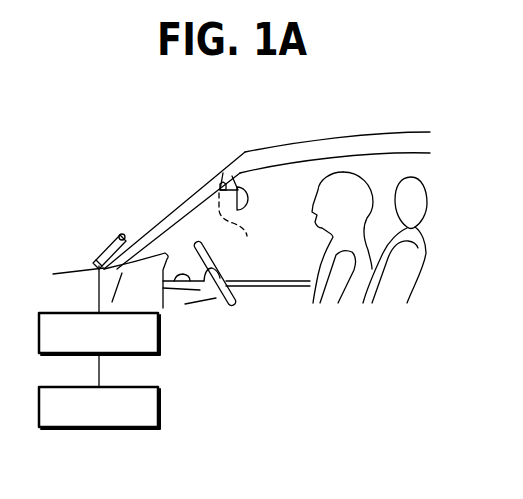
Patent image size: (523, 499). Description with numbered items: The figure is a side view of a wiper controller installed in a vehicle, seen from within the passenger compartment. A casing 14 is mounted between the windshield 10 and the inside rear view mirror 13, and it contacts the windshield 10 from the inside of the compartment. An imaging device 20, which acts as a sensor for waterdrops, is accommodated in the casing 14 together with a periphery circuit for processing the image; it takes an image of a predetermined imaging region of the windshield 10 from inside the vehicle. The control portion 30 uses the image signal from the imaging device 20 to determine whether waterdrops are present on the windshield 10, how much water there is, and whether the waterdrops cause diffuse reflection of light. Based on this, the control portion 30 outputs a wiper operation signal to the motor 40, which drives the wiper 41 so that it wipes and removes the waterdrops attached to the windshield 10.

The windshield 10 is at (175, 209).
The inside rear view mirror 13 is at (248, 195).
The casing 14 is at (222, 172).
The imaging device 20 is at (241, 231).
The control portion 30 is at (159, 405).
The motor 40 is at (159, 330).
The wiper 41 is at (118, 235).